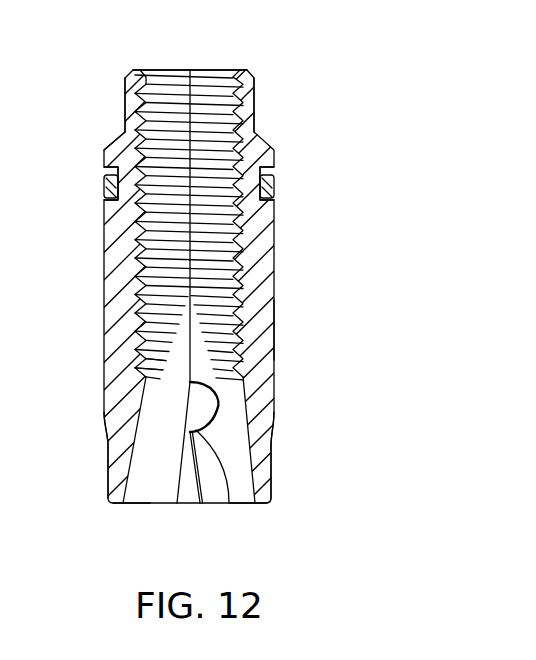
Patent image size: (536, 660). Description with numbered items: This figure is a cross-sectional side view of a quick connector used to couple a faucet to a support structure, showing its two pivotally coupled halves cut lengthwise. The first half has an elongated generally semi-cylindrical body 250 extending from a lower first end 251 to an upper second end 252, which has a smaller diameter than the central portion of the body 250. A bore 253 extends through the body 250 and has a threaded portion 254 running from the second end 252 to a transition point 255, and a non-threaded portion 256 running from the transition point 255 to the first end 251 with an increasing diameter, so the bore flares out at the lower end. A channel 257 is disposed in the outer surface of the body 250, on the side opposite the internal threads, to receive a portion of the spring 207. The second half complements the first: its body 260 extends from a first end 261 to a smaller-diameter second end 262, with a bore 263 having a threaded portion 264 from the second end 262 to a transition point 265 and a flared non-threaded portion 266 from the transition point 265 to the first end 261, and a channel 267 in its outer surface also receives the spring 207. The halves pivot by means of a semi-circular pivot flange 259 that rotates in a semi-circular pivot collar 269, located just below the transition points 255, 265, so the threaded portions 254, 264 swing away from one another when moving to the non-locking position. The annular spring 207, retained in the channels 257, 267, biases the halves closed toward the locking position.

The body 250 is at (103, 300).
The first end 251 is at (117, 498).
The second end 252 is at (137, 118).
The bore 253 is at (160, 55).
The threaded portion 254 is at (127, 152).
The transition point 255 is at (150, 372).
The non-threaded portion 256 is at (125, 456).
The channel 257 is at (78, 190).
The pivot flange 259 is at (192, 416).
The body 260 is at (258, 340).
The first end 261 is at (261, 492).
The second end 262 is at (245, 117).
The bore 263 is at (222, 56).
The threaded portion 264 is at (233, 270).
The transition point 265 is at (250, 380).
The non-threaded portion 266 is at (262, 441).
The channel 267 is at (290, 170).
The spring 207 is at (265, 185).
The pivot collar 269 is at (229, 503).